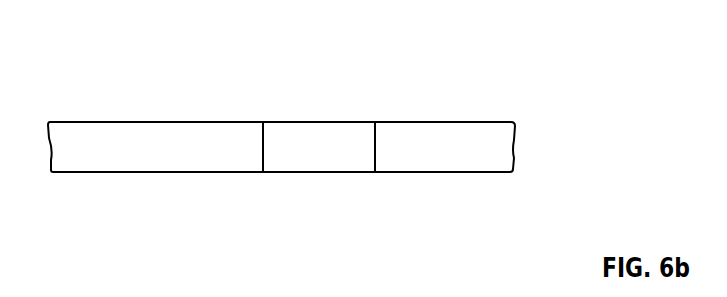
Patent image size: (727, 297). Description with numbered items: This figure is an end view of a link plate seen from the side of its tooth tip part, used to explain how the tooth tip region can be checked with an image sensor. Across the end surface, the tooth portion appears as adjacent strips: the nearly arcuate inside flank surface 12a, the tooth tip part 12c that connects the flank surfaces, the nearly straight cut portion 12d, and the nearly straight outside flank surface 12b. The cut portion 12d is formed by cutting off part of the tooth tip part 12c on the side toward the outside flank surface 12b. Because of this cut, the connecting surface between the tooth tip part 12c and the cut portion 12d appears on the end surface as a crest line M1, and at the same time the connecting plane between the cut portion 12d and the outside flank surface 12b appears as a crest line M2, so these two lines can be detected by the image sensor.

The inside flank surface 12a is at (77, 160).
The outside flank surface 12b is at (457, 160).
The tooth tip part 12c is at (240, 160).
The cut portion 12d is at (318, 160).
The crest line M1 is at (263, 137).
The crest line M2 is at (375, 137).